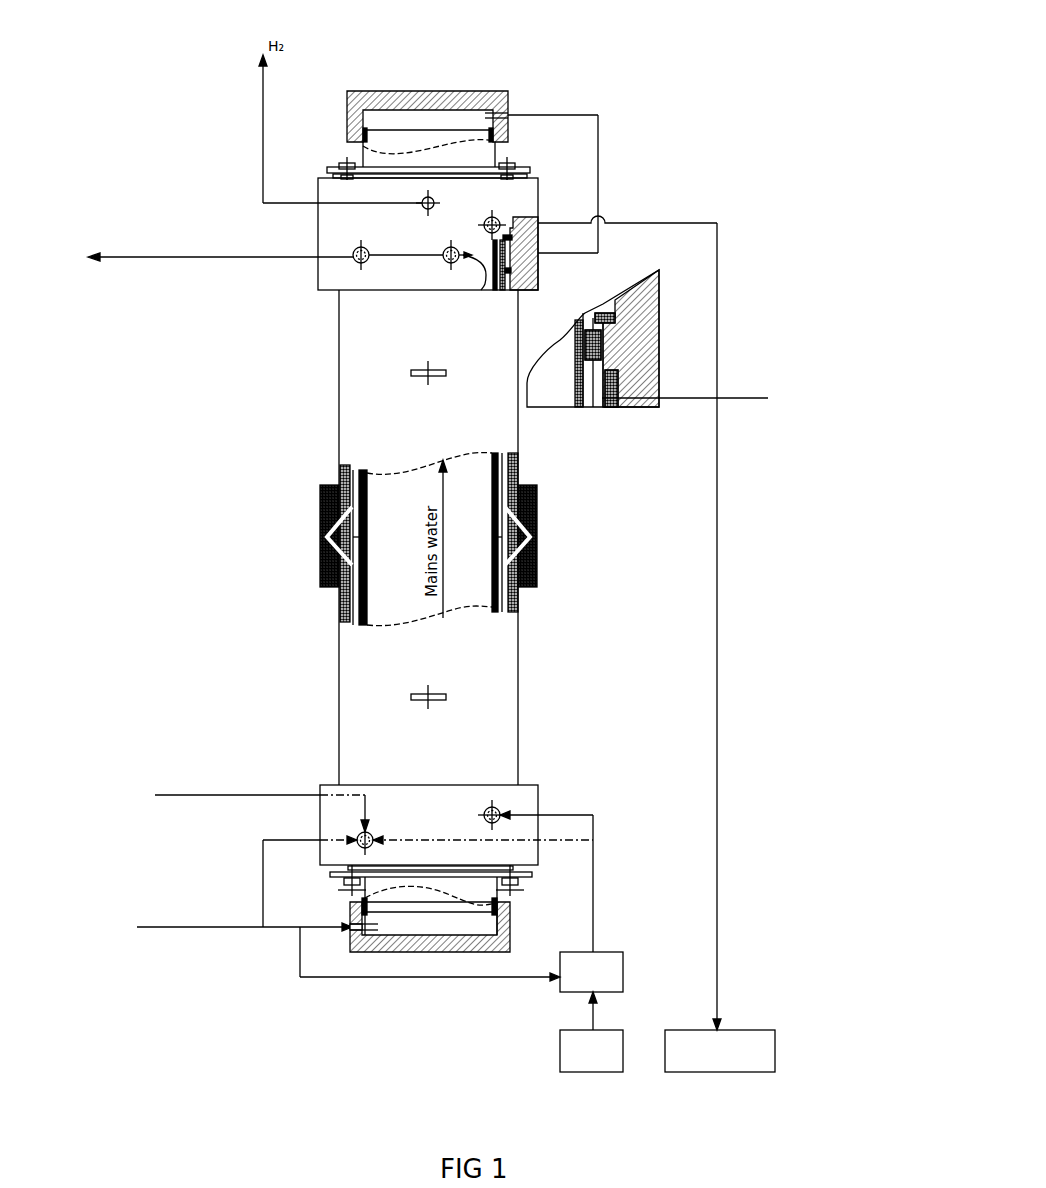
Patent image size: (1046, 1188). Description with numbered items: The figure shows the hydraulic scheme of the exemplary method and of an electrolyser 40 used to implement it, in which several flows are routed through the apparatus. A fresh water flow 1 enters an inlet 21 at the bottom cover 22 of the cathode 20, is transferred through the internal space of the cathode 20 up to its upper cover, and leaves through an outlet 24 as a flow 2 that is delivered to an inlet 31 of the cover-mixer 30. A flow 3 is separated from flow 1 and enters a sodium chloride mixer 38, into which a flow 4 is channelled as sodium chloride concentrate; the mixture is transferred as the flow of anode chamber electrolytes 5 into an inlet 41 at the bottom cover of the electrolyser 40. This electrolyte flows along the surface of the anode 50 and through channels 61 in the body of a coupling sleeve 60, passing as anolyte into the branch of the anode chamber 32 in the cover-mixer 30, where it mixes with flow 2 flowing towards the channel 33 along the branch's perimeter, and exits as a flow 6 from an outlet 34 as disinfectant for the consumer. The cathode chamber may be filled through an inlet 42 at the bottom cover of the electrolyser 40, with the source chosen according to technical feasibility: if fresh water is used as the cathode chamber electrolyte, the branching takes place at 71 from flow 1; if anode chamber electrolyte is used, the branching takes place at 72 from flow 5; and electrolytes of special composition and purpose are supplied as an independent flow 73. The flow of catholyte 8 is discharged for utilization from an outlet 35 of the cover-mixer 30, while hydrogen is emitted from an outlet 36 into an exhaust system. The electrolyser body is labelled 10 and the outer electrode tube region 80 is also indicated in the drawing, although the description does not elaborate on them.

The fresh water flow 1 is at (230, 930).
The flow 2 is at (598, 192).
The flow 3 is at (455, 978).
The flow 4 is at (593, 1010).
The flow of anode chamber electrolytes 5 is at (593, 888).
The flow 6 is at (267, 258).
The flow of catholyte 8 is at (717, 448).
The electrolytic cell tube 10 is at (360, 398).
The cathode 20 is at (378, 952).
The inlet 21 is at (300, 929).
The bottom cover 22 is at (370, 956).
The outlet 24 is at (508, 110).
The cover-mixer 30 is at (330, 217).
The inlet 31 is at (444, 259).
The anode chamber 32 is at (613, 323).
The channel 33 is at (600, 347).
The outlet 34 is at (355, 261).
The outlet 35 is at (499, 221).
The outlet 36 is at (434, 201).
The sodium chloride mixer 38 is at (623, 973).
The electrolyser 40 is at (445, 800).
The inlet 41 is at (499, 809).
The inlet 42 is at (356, 846).
The anode 50 is at (518, 472).
The coupling sleeve 60 is at (537, 513).
The channels 61 is at (537, 553).
The branching 71 is at (263, 848).
The branching 72 is at (563, 838).
The independent flow 73 is at (267, 796).
The outer electrode tube 80 is at (339, 477).